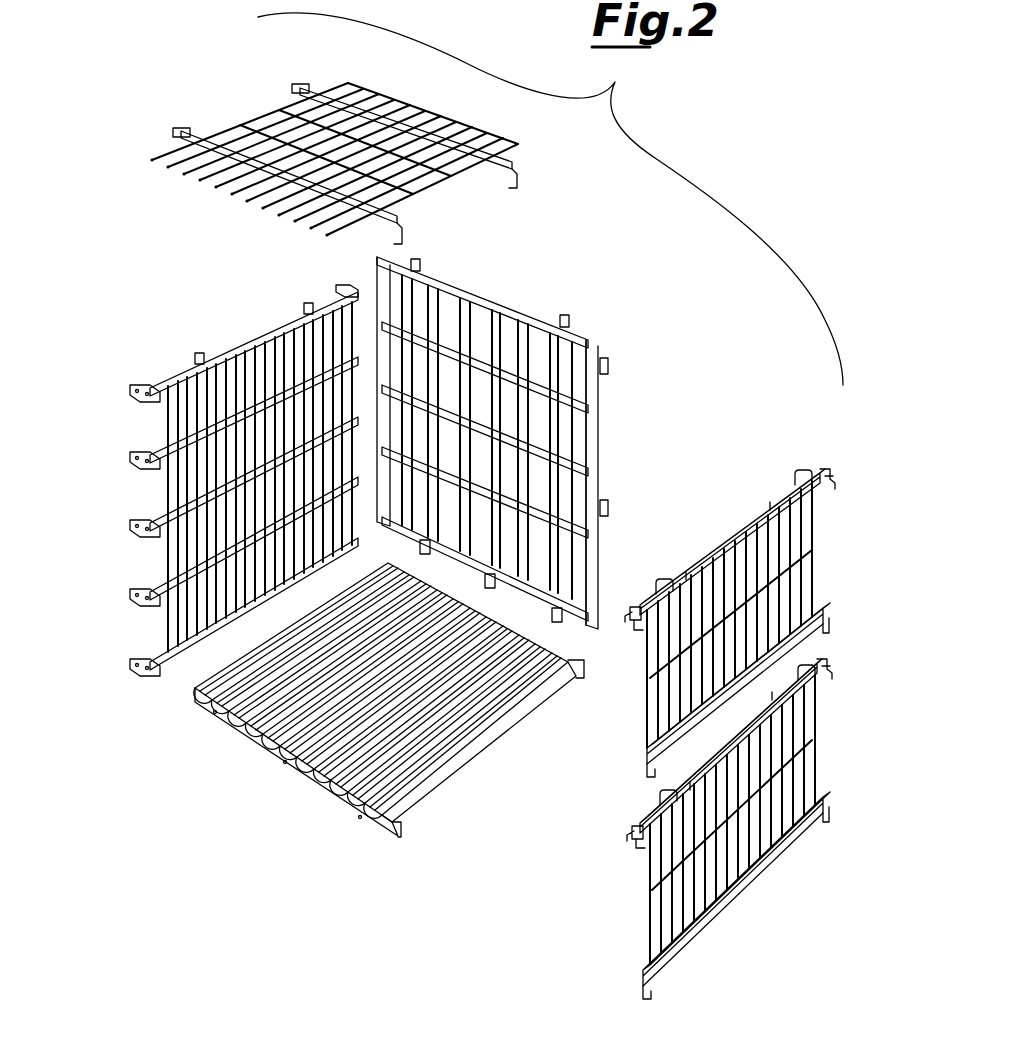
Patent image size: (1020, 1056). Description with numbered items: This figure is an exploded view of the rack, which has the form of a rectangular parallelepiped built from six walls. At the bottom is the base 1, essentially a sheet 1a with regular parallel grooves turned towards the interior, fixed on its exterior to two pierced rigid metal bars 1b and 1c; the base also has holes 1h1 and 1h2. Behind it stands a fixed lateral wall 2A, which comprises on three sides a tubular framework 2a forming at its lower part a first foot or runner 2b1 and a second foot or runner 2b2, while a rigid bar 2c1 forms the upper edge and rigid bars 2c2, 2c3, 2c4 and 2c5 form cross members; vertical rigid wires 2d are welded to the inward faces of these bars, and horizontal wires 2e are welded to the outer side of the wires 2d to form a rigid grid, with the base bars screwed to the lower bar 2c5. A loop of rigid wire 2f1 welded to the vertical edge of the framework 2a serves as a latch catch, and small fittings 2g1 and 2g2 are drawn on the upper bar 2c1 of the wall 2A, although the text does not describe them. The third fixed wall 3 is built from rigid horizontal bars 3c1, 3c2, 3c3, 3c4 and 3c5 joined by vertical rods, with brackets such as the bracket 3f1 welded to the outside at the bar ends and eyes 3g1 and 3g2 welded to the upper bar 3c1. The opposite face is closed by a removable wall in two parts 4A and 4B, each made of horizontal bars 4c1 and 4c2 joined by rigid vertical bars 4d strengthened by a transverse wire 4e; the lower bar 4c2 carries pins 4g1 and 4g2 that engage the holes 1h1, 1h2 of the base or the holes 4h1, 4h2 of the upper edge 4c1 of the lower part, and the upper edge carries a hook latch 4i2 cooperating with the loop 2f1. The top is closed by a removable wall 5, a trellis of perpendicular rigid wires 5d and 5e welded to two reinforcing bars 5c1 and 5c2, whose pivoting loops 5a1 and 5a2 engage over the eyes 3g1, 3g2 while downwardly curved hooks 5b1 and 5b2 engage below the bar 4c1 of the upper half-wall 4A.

The base 1 is at (409, 724).
The sheet 1a is at (320, 652).
The metal rigid bar 1b is at (503, 741).
The metal rigid bar 1c is at (330, 787).
The hole of the base 1h1 is at (596, 682).
The hole of the base 1h2 is at (401, 819).
The fixed lateral wall 2A is at (511, 454).
The tubular framework 2a is at (600, 520).
The first foot or runner 2b1 is at (455, 548).
The second foot or runner 2b2 is at (386, 410).
The rigid bar 2c1 is at (489, 292).
The rigid bar 2c2 is at (592, 432).
The rigid bar 2c3 is at (593, 470).
The rigid bar 2c4 is at (592, 548).
The rigid bar 2c5 is at (548, 602).
The rigid wire 2d is at (490, 322).
The metallic wire 2e is at (422, 362).
The loop of rigid wire 2f1 is at (608, 366).
The hook on rear wall top bar 2g1 is at (563, 316).
The hook on rear wall top bar 2g2 is at (418, 262).
The third fixed wall 3 is at (230, 499).
The rigid horizontal bar 3c1 is at (230, 330).
The rigid horizontal bar 3c2 is at (190, 447).
The rigid horizontal bar 3c3 is at (190, 520).
The rigid horizontal bar 3c4 is at (195, 583).
The rigid horizontal bar 3c5 is at (200, 655).
The bracket 3f1 is at (140, 373).
The eye 3g1 is at (306, 306).
The eye 3g2 is at (197, 353).
The removable lateral wall part 4A is at (820, 540).
The removable lateral wall part 4B is at (788, 745).
The horizontal bar 4c1 is at (770, 515).
The horizontal bar 4c2 is at (648, 752).
The rigid vertical bar 4d is at (800, 612).
The transverse wire 4e is at (815, 560).
The pin 4g1 is at (827, 628).
The pin 4g2 is at (645, 775).
The hole 4h1 is at (820, 663).
The hole 4h2 is at (640, 842).
The hook latch 4i2 is at (640, 650).
The removable wall 5 is at (369, 155).
The pivoting loop 5a1 is at (181, 128).
The pivoting loop 5a2 is at (298, 85).
The hook 5b1 is at (524, 166).
The hook 5b2 is at (392, 234).
The rigid metal bar 5c1 is at (432, 117).
The rigid metal bar 5c2 is at (283, 175).
The rigid metal wire 5d is at (347, 135).
The rigid metal wire 5e is at (440, 115).